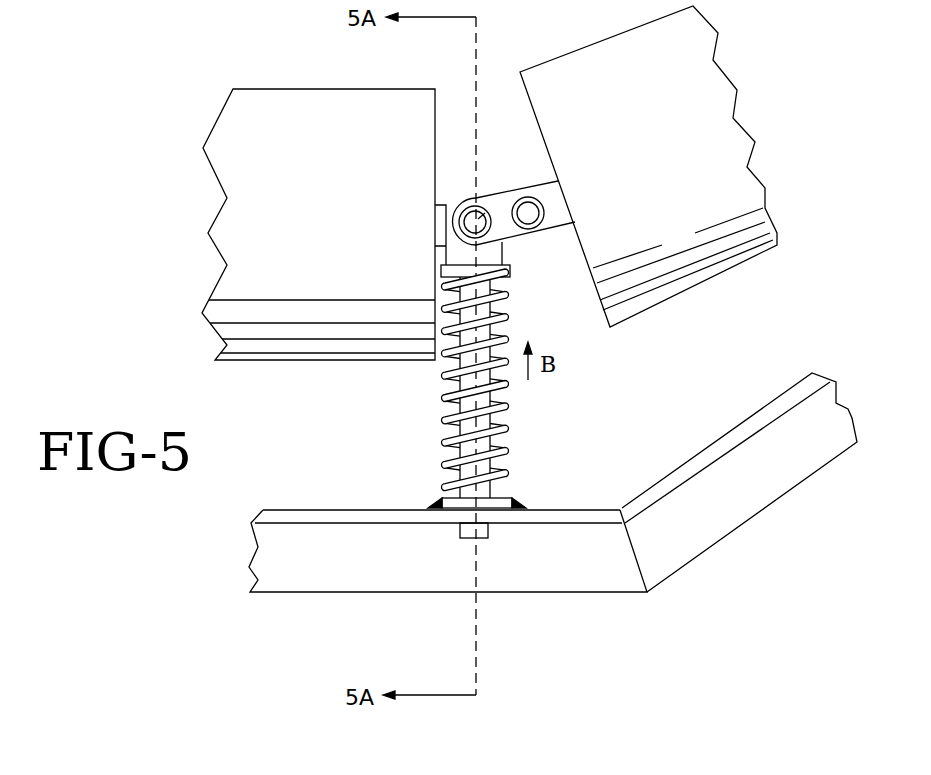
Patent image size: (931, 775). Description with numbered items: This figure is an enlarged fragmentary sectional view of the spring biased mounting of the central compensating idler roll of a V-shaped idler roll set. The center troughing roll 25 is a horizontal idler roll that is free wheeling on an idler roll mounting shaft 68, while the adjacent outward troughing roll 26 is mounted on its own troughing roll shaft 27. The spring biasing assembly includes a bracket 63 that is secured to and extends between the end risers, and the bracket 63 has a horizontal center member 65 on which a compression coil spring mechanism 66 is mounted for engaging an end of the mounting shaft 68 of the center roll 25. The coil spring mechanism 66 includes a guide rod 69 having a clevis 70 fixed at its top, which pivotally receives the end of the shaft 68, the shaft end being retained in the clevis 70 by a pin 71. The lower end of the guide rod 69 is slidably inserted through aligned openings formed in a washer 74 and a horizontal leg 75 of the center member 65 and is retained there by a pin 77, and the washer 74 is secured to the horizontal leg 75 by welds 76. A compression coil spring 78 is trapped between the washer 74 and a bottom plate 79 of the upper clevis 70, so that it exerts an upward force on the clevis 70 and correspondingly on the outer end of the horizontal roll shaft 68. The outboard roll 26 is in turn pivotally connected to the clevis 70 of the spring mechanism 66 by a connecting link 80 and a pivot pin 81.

The center troughing roll 25 is at (289, 207).
The outward troughing roll 26 is at (671, 131).
The troughing roll shaft 27 is at (553, 208).
The bracket 63 is at (310, 593).
The horizontal center member 65 is at (597, 577).
The compression coil spring mechanism 66 is at (517, 404).
The idler roll mounting shaft 68 is at (444, 215).
The guide rod 69 is at (487, 440).
The clevis 70 is at (467, 201).
The pin 71 is at (478, 207).
The washer 74 is at (453, 505).
The horizontal leg 75 is at (368, 515).
The weld 76 is at (514, 500).
The pin 77 is at (476, 528).
The compression coil spring 78 is at (450, 373).
The bottom plate 79 is at (441, 270).
The connecting link 80 is at (506, 228).
The pivot pin 81 is at (530, 212).